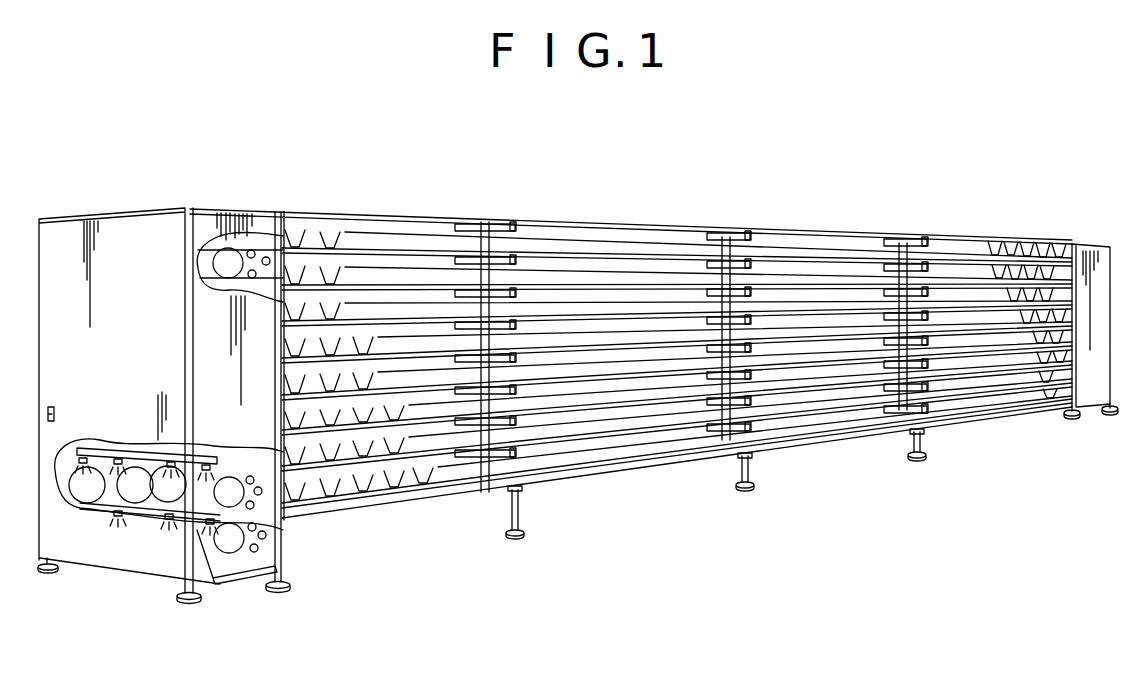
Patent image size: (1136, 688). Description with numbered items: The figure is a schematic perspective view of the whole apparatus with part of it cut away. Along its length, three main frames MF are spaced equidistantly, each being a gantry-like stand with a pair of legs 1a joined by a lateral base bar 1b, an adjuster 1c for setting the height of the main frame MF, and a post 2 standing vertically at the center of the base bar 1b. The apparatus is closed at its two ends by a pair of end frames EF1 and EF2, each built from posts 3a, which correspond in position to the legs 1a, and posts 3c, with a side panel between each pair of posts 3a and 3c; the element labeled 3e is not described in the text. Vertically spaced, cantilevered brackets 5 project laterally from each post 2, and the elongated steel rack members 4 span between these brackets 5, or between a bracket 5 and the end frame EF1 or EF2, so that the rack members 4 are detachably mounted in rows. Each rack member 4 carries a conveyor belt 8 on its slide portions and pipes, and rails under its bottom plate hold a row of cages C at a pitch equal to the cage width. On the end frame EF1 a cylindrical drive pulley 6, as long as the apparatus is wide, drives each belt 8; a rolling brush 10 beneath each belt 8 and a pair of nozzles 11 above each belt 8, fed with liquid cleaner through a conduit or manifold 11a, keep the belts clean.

The end frame EF1 is at (162, 205).
The end frame EF2 is at (1079, 236).
The side panel of end frame 3e is at (69, 238).
The post 3a is at (284, 560).
The post 3c is at (43, 540).
The rack member 4 is at (381, 218).
The cage C is at (317, 224).
The main frame MF is at (486, 222).
The post 2 is at (470, 248).
The bracket 5 is at (502, 229).
The lateral base bar 1b is at (508, 498).
The leg 1a is at (519, 514).
The adjuster 1c is at (506, 538).
The rolling brush 10 is at (246, 576).
The nozzle 11 is at (73, 445).
The conduit or manifold 11a is at (113, 448).
The drive pulley 6 is at (138, 497).
The conveyor belt 8 is at (97, 494).